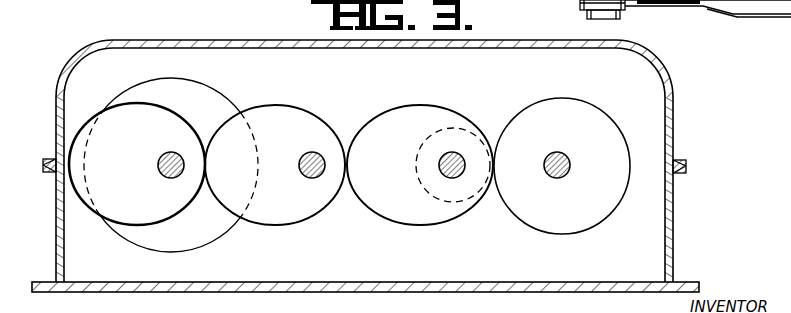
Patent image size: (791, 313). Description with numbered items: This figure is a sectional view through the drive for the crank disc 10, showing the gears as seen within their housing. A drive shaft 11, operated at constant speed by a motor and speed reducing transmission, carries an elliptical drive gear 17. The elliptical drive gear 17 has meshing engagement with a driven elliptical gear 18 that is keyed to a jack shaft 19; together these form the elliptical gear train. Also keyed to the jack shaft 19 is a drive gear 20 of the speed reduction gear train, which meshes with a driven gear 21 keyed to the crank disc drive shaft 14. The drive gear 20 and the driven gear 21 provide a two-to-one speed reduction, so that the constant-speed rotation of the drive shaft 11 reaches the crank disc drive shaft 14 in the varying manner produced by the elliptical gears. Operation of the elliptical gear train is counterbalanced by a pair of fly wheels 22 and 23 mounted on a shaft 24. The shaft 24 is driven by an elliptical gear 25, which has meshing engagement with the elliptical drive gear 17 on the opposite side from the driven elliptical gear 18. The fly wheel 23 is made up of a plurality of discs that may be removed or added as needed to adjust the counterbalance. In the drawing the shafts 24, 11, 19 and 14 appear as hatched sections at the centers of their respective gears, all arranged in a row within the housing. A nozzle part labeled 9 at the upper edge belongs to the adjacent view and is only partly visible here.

The fly wheel 22 is at (210, 86).
The elliptical gear 25 is at (172, 125).
The shaft 24 is at (163, 173).
The elliptical drive gear 17 is at (319, 133).
The drive shaft 11 is at (305, 172).
The driven elliptical gear 18 is at (429, 120).
The drive gear 20 is at (461, 122).
The jack shaft 19 is at (446, 172).
The driven gear 21 is at (592, 113).
The crank disc drive shaft 14 is at (567, 170).
The nozzle 9 is at (611, 20).
The crank disc 10 is at (517, 6).
The fly wheel 23 is at (222, 7).